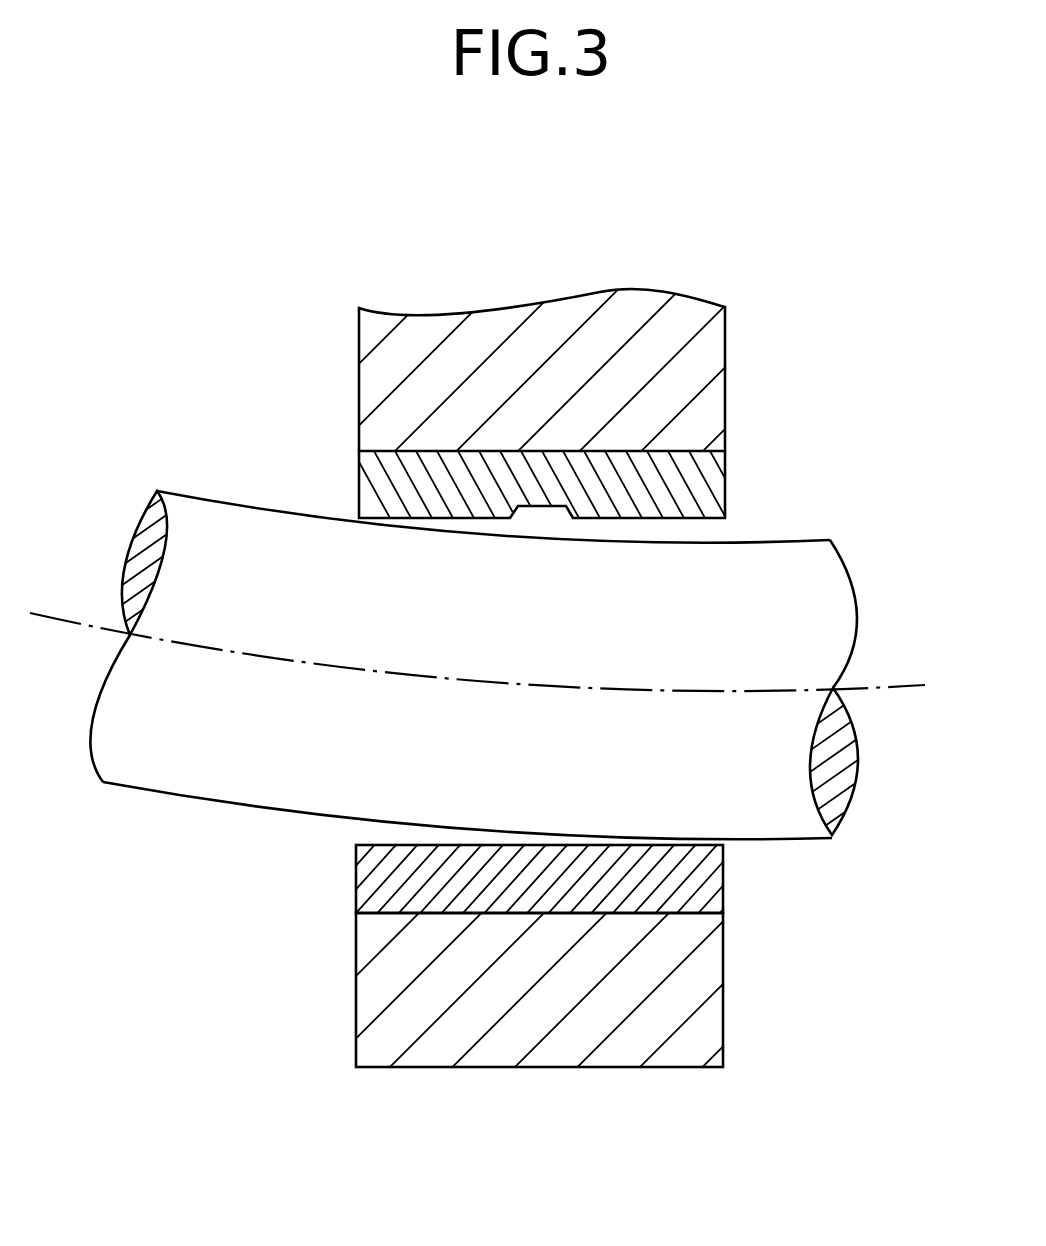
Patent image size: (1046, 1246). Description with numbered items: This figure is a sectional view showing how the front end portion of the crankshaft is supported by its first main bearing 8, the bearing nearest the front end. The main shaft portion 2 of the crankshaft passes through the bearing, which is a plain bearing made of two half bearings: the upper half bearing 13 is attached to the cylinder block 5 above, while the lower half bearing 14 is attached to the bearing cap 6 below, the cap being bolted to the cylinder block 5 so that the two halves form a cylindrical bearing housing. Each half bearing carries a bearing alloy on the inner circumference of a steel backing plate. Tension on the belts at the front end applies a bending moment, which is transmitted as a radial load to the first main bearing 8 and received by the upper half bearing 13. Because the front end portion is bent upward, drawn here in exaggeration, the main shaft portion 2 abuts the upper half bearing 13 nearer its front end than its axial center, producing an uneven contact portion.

The main shaft portion 2 is at (820, 538).
The cylinder block 5 is at (725, 343).
The bearing cap 6 is at (723, 968).
The first main bearing 8 is at (538, 400).
The upper half bearing 13 is at (725, 477).
The lower half bearing 14 is at (723, 887).